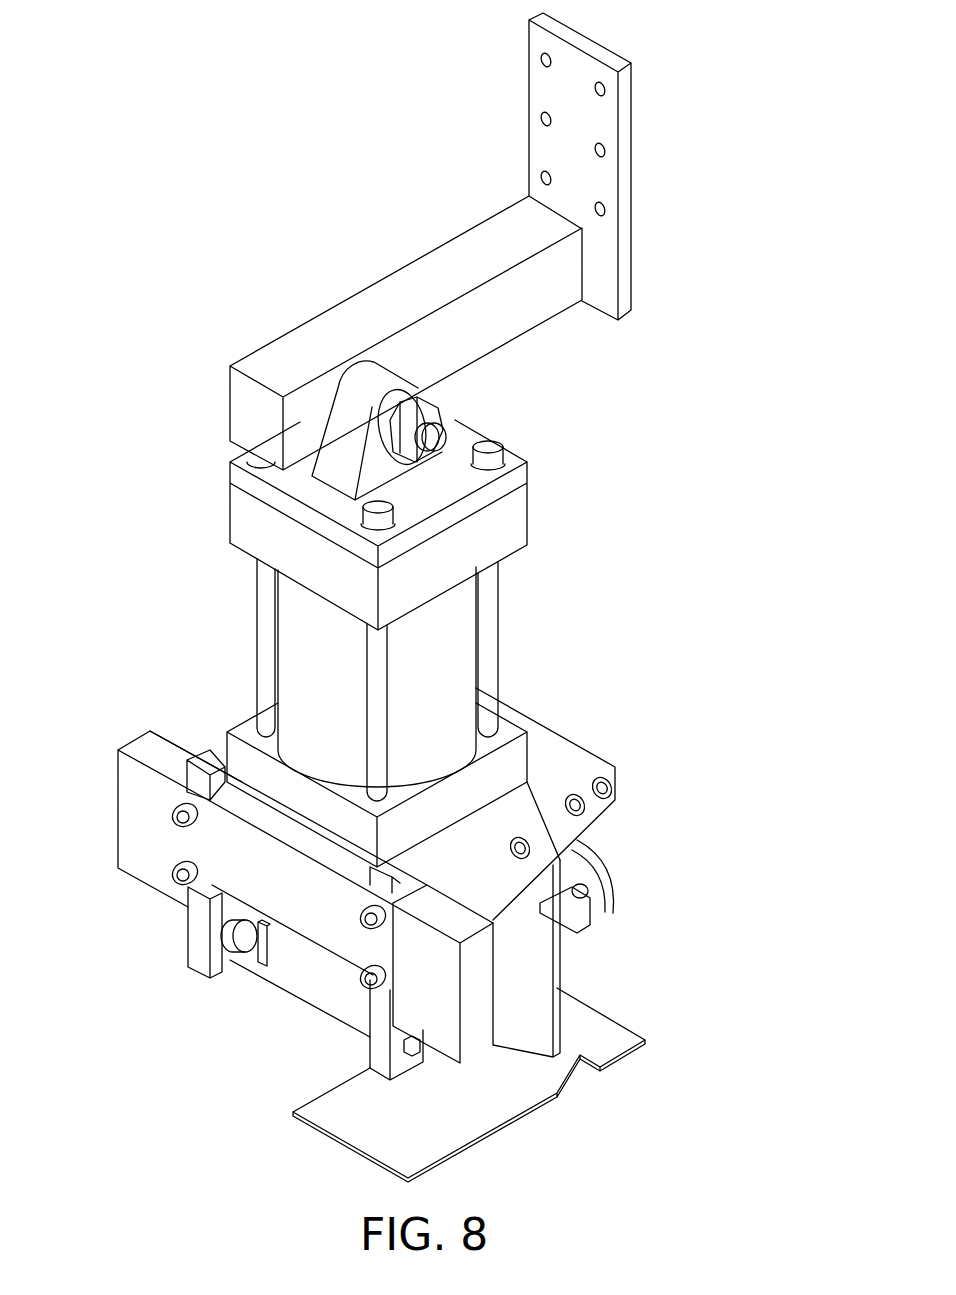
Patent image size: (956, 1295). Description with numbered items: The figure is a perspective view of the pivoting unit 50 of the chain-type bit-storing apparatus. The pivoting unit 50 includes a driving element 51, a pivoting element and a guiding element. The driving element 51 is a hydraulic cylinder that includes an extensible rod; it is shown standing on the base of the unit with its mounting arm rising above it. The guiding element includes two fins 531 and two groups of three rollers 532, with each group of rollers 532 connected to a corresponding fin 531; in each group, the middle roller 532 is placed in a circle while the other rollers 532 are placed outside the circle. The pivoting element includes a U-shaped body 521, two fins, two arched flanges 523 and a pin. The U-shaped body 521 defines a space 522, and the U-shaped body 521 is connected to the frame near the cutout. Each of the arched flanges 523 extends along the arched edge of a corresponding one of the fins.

The pivoting unit 50 is at (148, 322).
The driving element 51 is at (470, 638).
The U-shaped body 521 is at (538, 970).
The space 522 is at (515, 1006).
The arched flange 523 is at (256, 915).
The fin 531 is at (140, 792).
The roller 532 is at (220, 938).